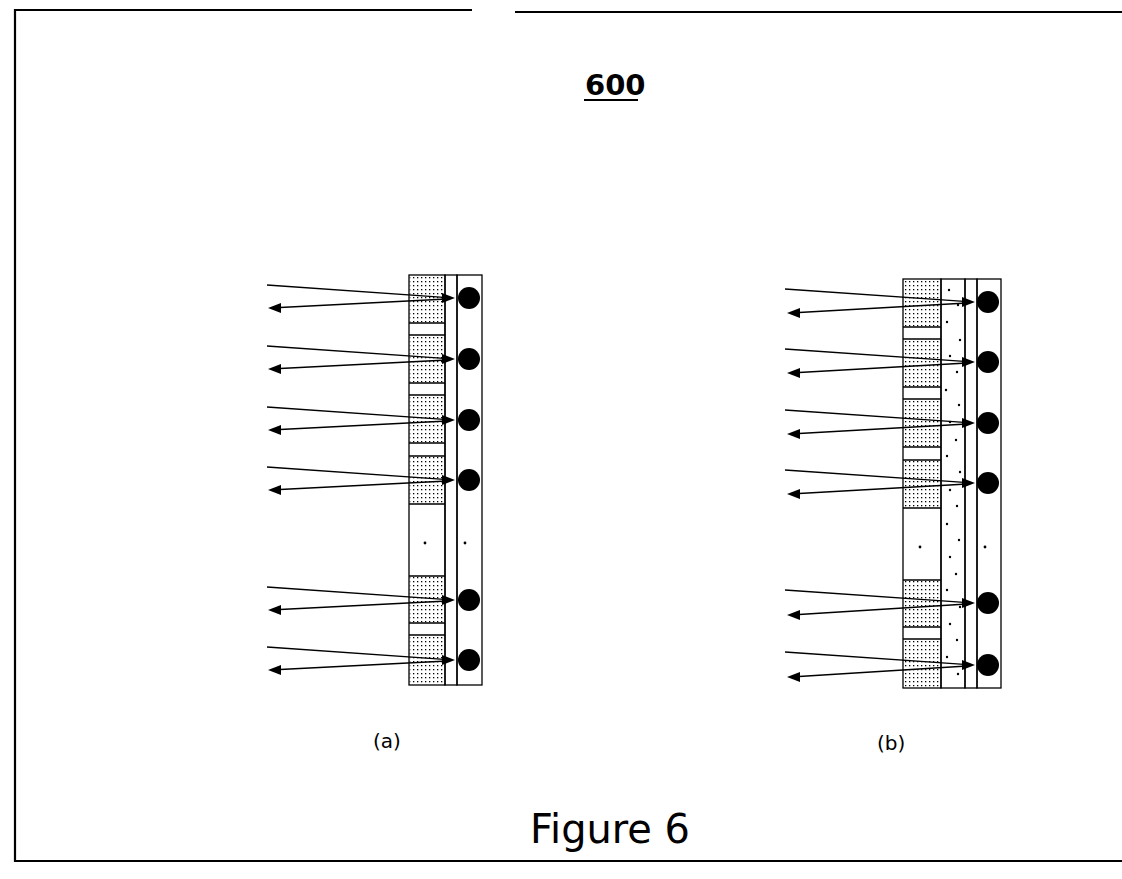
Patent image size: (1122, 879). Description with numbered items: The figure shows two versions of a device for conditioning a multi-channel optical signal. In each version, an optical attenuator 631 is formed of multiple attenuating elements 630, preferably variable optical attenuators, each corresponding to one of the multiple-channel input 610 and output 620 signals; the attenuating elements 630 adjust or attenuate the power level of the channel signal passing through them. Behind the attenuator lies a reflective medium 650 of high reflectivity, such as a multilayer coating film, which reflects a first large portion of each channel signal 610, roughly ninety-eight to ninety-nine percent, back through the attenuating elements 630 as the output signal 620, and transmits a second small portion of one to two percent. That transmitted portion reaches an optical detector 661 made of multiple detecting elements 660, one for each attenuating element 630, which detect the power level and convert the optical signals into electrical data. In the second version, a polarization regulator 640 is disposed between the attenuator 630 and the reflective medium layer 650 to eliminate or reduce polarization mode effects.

The input signal 610 is at (293, 288).
The output signal 620 is at (266, 307).
The attenuating element 630 is at (433, 287).
The optical attenuator 631 is at (396, 540).
The polarization regulator 640 is at (952, 290).
The reflective medium 650 is at (452, 288).
The detecting element 660 is at (478, 288).
The optical detector 661 is at (492, 548).